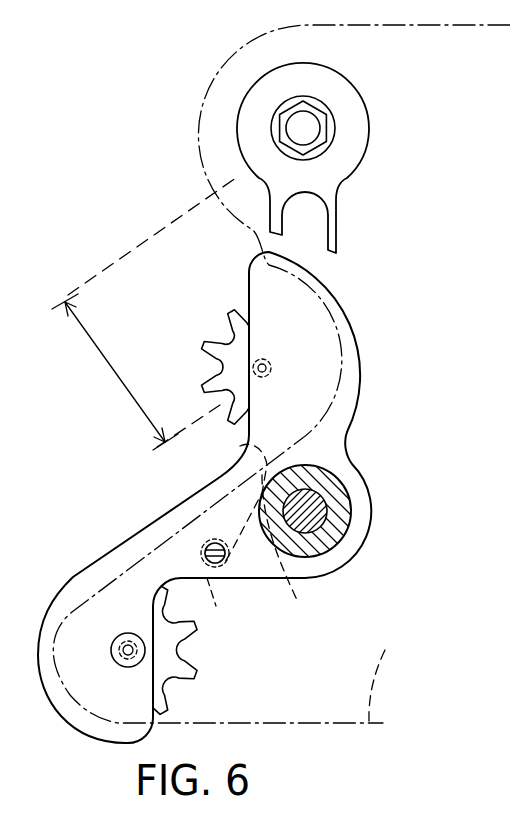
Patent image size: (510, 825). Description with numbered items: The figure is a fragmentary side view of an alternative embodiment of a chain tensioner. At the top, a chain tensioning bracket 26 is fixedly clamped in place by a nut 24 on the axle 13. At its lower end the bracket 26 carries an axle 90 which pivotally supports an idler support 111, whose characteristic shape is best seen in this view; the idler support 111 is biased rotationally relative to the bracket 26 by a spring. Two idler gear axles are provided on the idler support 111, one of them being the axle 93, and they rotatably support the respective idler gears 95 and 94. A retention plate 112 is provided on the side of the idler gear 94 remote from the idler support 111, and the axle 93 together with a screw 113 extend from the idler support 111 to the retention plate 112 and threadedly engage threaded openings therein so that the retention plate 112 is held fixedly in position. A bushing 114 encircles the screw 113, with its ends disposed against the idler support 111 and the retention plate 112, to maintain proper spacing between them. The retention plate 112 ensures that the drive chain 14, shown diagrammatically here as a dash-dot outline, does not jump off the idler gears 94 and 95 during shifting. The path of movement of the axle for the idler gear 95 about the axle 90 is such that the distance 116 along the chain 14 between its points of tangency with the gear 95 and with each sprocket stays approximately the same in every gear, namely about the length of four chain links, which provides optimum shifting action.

The axle 13 is at (303, 128).
The nut 24 is at (318, 150).
The chain tensioning bracket 26 is at (310, 208).
The drive chain 14 is at (281, 374).
The axle 90 is at (315, 510).
The idler gear axle 93 is at (256, 364).
The idler gear 94 is at (188, 667).
The idler gear 95 is at (226, 372).
The idler support 111 is at (335, 424).
The retention plate 112 is at (279, 528).
The screw 113 is at (223, 562).
The bushing 114 is at (226, 605).
The distance 116 is at (117, 377).